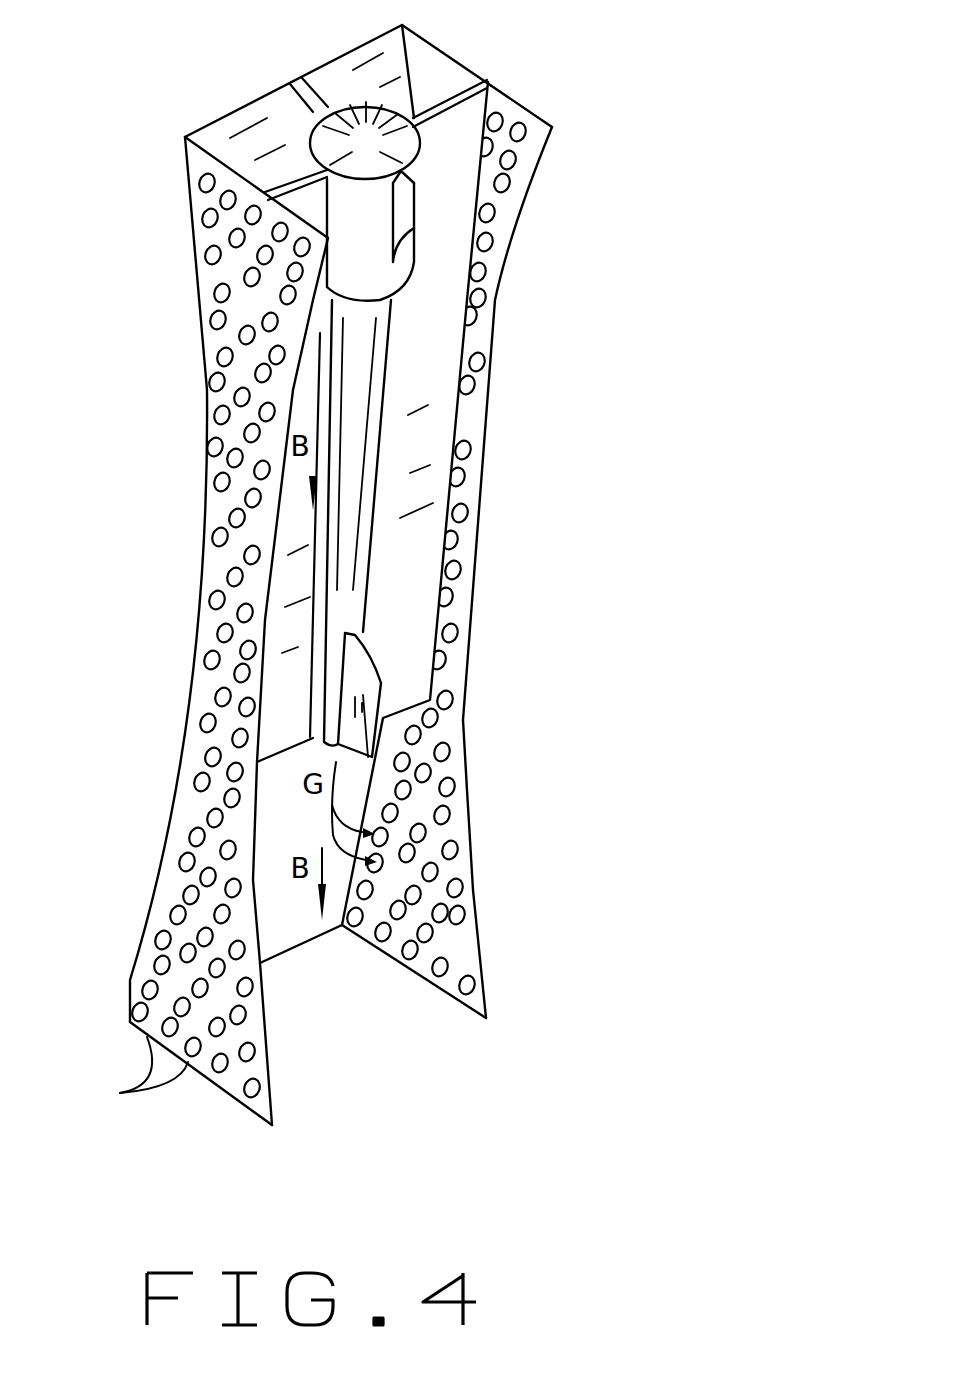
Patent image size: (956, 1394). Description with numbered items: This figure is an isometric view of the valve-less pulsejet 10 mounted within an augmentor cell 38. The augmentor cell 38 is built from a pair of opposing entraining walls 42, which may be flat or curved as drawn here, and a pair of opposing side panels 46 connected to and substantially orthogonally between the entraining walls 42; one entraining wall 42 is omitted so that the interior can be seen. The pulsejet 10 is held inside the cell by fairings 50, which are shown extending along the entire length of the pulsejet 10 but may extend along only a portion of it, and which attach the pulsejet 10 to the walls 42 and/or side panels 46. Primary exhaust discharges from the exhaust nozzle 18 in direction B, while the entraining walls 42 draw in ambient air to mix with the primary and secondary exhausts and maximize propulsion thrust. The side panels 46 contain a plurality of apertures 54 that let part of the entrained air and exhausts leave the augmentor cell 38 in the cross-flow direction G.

The pulsejet 10 is at (448, 336).
The exhaust nozzle 18 is at (345, 552).
The augmentor cell 38 is at (528, 647).
The entraining wall 42 is at (373, 68).
The side panel 46 is at (422, 803).
The fairing 50 is at (302, 203).
The aperture 54 is at (120, 1093).